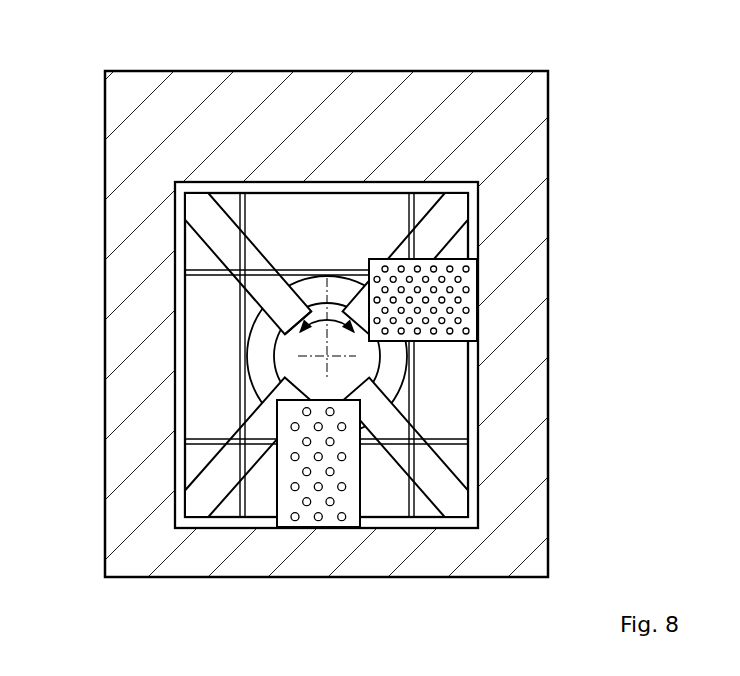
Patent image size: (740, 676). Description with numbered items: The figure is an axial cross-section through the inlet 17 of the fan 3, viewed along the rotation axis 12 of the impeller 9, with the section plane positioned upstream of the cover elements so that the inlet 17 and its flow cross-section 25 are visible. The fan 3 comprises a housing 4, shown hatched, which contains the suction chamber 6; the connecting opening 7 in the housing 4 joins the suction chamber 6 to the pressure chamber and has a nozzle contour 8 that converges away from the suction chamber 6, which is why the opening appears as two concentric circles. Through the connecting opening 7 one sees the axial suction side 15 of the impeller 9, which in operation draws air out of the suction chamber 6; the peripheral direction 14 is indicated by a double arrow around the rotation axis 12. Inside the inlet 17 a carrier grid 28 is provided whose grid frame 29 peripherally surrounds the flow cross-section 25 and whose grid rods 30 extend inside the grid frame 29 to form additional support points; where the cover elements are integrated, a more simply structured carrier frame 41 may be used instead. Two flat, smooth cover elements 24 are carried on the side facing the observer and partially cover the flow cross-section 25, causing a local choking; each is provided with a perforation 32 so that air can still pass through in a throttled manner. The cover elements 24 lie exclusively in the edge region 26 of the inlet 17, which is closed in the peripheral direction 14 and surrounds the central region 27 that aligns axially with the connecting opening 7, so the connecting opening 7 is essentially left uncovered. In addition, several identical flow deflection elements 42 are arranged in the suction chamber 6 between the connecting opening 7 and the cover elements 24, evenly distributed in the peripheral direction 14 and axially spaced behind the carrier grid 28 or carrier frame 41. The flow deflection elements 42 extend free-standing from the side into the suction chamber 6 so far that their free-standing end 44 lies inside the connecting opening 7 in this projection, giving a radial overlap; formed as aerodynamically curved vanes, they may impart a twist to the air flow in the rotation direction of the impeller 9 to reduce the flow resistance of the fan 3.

The fan 3 is at (629, 157).
The housing 4 is at (562, 243).
The suction chamber 6 is at (221, 342).
The connecting opening 7 is at (216, 356).
The nozzle contour 8 is at (271, 364).
The impeller 9 is at (313, 389).
The rotation axis 12 is at (297, 330).
The peripheral direction 14 is at (326, 302).
The suction side 15 is at (326, 383).
The inlet 17 is at (455, 424).
The cover element 24 is at (490, 300).
The flow cross-section 25 is at (192, 463).
The edge region 26 is at (432, 505).
The central region 27 is at (476, 508).
The carrier grid 28 is at (243, 355).
The grid frame 29 is at (182, 287).
The grid rod 30 is at (410, 223).
The perforation 32 is at (472, 332).
The carrier frame 41 is at (163, 332).
The flow deflection element 42 is at (327, 396).
The free-standing end 44 is at (352, 375).